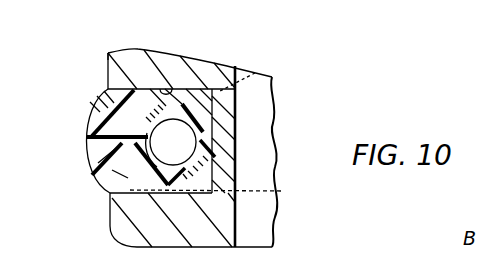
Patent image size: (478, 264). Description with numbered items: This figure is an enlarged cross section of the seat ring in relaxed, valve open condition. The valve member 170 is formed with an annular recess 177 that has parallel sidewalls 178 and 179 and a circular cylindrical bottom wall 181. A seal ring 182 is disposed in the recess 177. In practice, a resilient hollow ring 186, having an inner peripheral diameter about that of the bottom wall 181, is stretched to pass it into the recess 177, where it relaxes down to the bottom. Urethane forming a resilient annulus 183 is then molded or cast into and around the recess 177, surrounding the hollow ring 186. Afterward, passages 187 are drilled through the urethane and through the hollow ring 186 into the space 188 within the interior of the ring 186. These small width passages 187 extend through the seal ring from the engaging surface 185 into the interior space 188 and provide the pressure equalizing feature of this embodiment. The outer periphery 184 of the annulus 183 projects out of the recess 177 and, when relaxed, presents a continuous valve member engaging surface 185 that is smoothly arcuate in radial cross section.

The valve member 170 is at (215, 64).
The annular recess 177 is at (255, 73).
The sidewall 178 is at (155, 89).
The sidewall 179 is at (138, 192).
The bottom wall 181 is at (221, 191).
The seal ring 182 is at (112, 190).
The resilient annulus 183 is at (106, 118).
The outer periphery 184 is at (104, 176).
The valve member engaging surface 185 is at (90, 152).
The resilient hollow ring 186 is at (205, 135).
The passages 187 is at (88, 139).
The space 188 is at (196, 150).